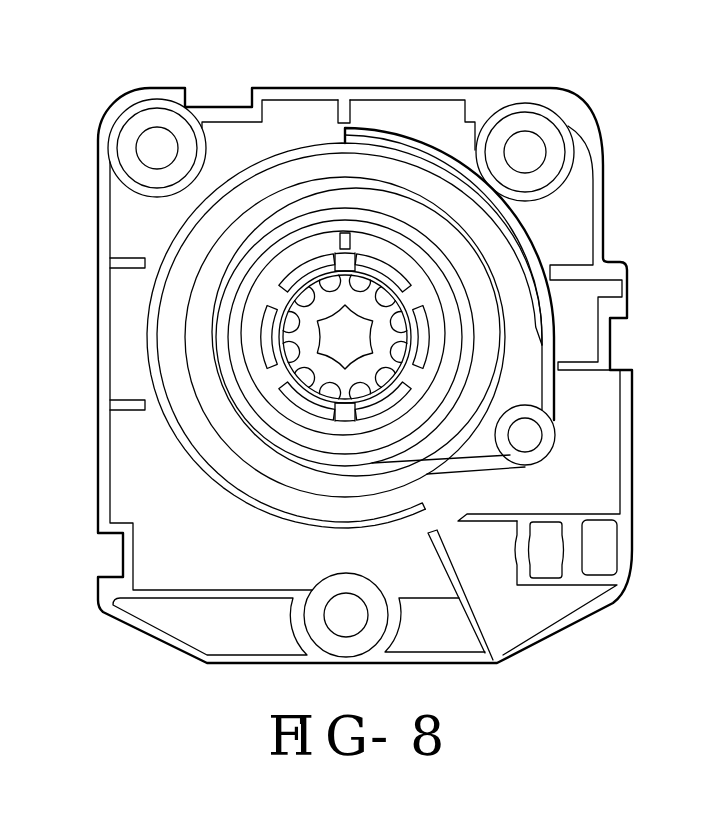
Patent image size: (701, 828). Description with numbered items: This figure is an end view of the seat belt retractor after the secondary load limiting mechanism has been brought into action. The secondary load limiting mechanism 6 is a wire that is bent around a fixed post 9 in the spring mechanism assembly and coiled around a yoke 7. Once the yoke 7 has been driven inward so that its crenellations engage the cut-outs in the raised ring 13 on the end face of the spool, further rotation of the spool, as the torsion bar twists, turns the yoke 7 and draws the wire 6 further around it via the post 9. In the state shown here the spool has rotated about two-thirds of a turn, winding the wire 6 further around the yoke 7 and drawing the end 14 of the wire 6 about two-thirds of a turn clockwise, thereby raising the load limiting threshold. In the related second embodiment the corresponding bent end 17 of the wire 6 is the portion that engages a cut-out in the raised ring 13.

The secondary load limiting mechanism 6 is at (383, 238).
The yoke 7 is at (404, 288).
The fixed post 9 is at (527, 436).
The raised ring 13 is at (420, 335).
The end of wire 14 is at (345, 134).
The bent end of wire 17 is at (343, 234).